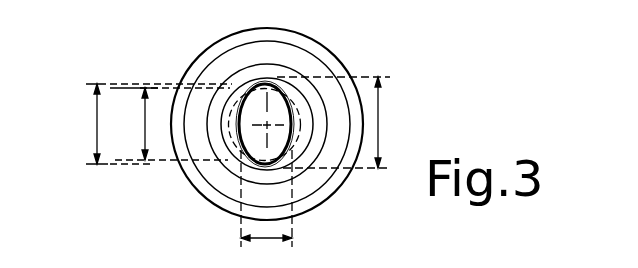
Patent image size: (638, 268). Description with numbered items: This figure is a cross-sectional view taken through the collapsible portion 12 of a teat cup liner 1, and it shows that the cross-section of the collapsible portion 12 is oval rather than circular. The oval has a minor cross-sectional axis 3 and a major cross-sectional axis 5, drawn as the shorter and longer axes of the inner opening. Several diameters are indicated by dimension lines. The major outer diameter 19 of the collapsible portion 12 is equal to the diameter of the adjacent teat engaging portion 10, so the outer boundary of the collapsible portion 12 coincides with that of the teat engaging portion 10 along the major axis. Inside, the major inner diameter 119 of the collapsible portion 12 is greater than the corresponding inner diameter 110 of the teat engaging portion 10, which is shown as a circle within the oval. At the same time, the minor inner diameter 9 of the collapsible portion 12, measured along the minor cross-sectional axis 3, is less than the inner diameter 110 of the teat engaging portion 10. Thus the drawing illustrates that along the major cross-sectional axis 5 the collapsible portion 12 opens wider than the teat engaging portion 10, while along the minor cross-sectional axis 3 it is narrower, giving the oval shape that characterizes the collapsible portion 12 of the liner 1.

The sealing element 1 is at (151, 25).
The minor cross-sectional axis 3 is at (292, 112).
The major cross-sectional axis 5 is at (272, 100).
The minor inner diameter 9 is at (260, 241).
The teat engaging portion 10 is at (225, 110).
The collapsible portion 12 is at (293, 150).
The major outer diameter 19 is at (388, 138).
The inner diameter of the teat engaging portion 110 is at (143, 119).
The major inner diameter 119 is at (97, 124).